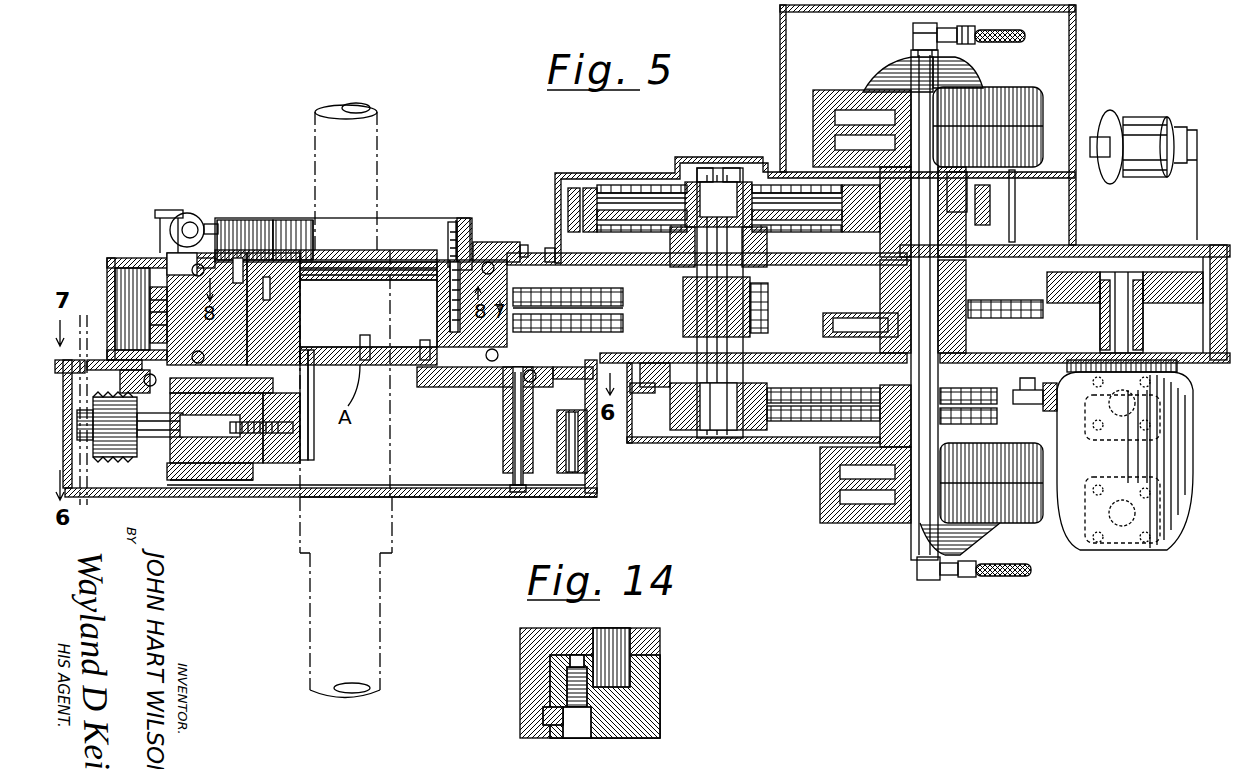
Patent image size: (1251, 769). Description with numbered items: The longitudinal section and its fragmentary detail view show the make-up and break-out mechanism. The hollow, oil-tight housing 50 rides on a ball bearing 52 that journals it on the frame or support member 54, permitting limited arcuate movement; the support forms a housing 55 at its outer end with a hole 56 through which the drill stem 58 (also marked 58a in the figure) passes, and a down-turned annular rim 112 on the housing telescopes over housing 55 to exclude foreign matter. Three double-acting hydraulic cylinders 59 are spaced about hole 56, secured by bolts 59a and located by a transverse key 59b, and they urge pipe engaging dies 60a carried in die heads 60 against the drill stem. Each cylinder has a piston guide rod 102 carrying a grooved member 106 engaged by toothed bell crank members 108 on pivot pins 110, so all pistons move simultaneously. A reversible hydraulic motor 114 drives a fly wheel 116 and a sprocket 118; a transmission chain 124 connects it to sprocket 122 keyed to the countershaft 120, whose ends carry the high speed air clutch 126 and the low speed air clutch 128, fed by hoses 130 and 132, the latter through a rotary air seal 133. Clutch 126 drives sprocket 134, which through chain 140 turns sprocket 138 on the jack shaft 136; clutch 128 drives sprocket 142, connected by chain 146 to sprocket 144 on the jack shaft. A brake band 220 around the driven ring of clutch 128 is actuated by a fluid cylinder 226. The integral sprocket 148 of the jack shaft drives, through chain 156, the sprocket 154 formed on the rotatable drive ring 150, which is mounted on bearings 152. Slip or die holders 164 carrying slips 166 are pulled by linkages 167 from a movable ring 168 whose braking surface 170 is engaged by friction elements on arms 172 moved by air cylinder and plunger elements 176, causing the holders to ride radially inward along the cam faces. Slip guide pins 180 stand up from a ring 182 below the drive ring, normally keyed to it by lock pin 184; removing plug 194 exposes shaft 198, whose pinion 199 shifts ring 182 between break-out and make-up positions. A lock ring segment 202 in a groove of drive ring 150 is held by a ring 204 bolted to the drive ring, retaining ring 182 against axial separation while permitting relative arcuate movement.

In FIG. 5, the housing 50 is at (118, 262).
In FIG. 5, the ball bearing 52 is at (510, 392).
In FIG. 5, the frame or support member 54 is at (490, 500).
In FIG. 5, the housing 55 is at (440, 492).
In FIG. 5, the hole 56 is at (400, 495).
In FIG. 5, the drill stem 58 is at (378, 628).
In FIG. 5, the shaft upper portion 58a is at (325, 150).
In FIG. 5, the hydraulic cylinders 59 is at (250, 485).
In FIG. 5, the bolts 59a is at (205, 485).
In FIG. 5, the transverse key 59b is at (175, 488).
In FIG. 5, the die heads 60 is at (312, 452).
In FIG. 5, the pipe engaging dies 60a is at (308, 436).
In FIG. 5, the piston guide rod 102 is at (95, 482).
In FIG. 5, the grooved member 106 is at (118, 463).
In FIG. 5, the toothed bell crank members 108 is at (520, 442).
In FIG. 5, the pivot pins 110 is at (590, 448).
In FIG. 5, the annular rim 112 is at (72, 358).
In FIG. 5, the hydraulically actuated motor 114 is at (1120, 553).
In FIG. 5, the fly wheel 116 is at (1160, 270).
In FIG. 5, the sprocket 118 is at (1150, 340).
In FIG. 5, the countershaft 120 is at (950, 288).
In FIG. 5, the sprocket 122 is at (1010, 308).
In FIG. 5, the transmission chain 124 is at (1040, 306).
In FIG. 5, the air actuated clutch 126 is at (998, 518).
In FIG. 5, the air actuated clutch 128 is at (995, 88).
In FIG. 5, the hose 130 is at (1000, 568).
In FIG. 5, the hose 132 is at (998, 42).
In FIG. 5, the rotary air seal 133 is at (913, 33).
In FIG. 5, the sprocket 134 is at (775, 428).
In FIG. 5, the jack shaft 136 is at (718, 440).
In FIG. 5, the sprocket 138 is at (672, 438).
In FIG. 5, the transmission drive chain 140 is at (815, 428).
In FIG. 5, the sprocket 142 is at (1000, 212).
In FIG. 5, the sprocket 144 is at (597, 190).
In FIG. 5, the transmission drive chain 146 is at (572, 188).
In FIG. 5, the sprocket 148 is at (775, 320).
In FIG. 5, the rotatable drive ring 150 is at (508, 252).
In FIG. 14, the rotatable drive ring 150 is at (527, 692).
In FIG. 5, the bearings 152 is at (497, 240).
In FIG. 5, the sprocket 154 is at (555, 265).
In FIG. 5, the transmission chain 156 is at (616, 290).
In FIG. 5, the slip or die holder 164 is at (305, 306).
In FIG. 5, the slips 166 is at (305, 320).
In FIG. 5, the linkages 167 is at (305, 292).
In FIG. 5, the movable ring element 168 is at (268, 248).
In FIG. 5, the braking surface 170 is at (466, 220).
In FIG. 5, the arms 172 is at (207, 227).
In FIG. 5, the air actuated cylinder and plunger elements 176 is at (180, 210).
In FIG. 5, the slip guide pins 180 is at (428, 333).
In FIG. 5, the relatively movable ring 182 is at (305, 352).
In FIG. 14, the relatively movable ring 182 is at (625, 733).
In FIG. 14, the removable lock pin 184 is at (620, 640).
In FIG. 5, the screw threaded plug 194 is at (450, 238).
In FIG. 5, the shaft 198 is at (452, 300).
In FIG. 5, the pinion 199 is at (455, 312).
In FIG. 14, the lock ring segment 202 is at (545, 715).
In FIG. 5, the ring 204 is at (355, 350).
In FIG. 14, the ring 204 is at (557, 738).
In FIG. 5, the brake band 220 is at (800, 145).
In FIG. 5, the fluid cylinder 226 is at (1125, 118).